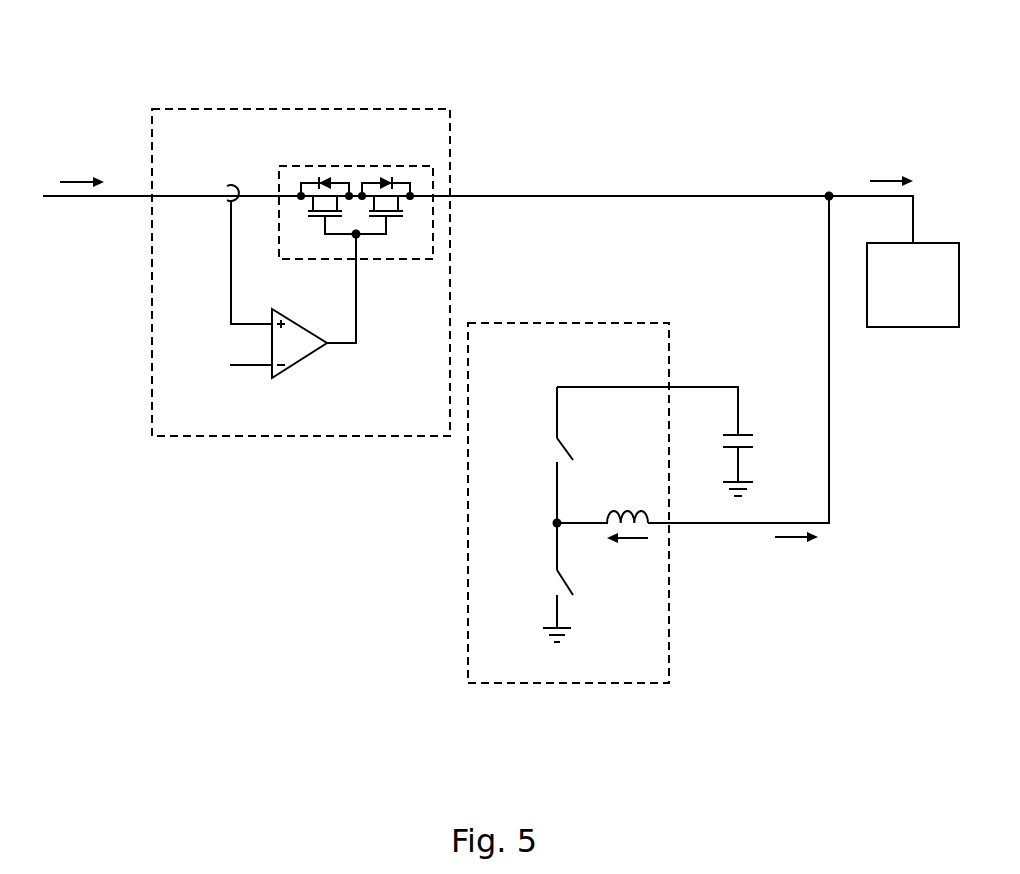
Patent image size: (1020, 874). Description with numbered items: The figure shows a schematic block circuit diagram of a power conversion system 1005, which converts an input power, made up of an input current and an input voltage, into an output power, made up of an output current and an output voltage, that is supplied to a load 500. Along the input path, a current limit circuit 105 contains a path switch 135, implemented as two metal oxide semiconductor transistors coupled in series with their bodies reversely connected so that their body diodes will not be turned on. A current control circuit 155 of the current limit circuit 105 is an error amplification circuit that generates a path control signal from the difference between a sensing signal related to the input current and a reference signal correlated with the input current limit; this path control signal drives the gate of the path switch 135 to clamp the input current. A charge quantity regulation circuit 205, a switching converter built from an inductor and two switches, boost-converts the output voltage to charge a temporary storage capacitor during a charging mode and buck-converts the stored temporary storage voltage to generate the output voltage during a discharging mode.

The power conversion system 1005 is at (843, 52).
The current limit circuit 105 is at (452, 134).
The path switch 135 is at (366, 162).
The current control circuit 155 is at (283, 372).
The charge quantity regulation circuit 205 is at (627, 324).
The load 500 is at (913, 285).